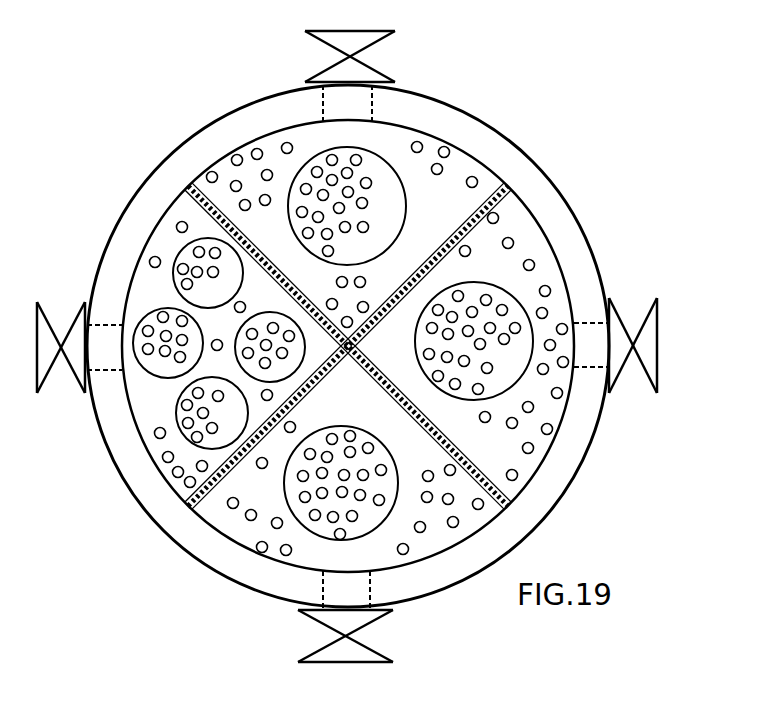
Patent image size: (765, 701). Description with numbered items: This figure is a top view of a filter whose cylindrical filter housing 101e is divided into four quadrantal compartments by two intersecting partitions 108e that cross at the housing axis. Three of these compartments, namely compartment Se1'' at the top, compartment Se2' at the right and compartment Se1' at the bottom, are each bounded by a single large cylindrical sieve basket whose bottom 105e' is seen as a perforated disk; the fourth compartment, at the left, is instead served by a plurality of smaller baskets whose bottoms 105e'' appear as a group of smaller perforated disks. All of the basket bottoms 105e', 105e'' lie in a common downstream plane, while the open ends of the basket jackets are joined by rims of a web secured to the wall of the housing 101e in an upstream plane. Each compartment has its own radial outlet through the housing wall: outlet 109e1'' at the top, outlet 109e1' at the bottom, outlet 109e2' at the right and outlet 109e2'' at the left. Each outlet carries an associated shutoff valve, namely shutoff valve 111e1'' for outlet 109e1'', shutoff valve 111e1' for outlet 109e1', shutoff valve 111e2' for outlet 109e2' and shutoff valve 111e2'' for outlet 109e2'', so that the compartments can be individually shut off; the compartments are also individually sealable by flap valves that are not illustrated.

The filter housing 101e is at (562, 267).
The intersecting partitions 108e is at (383, 313).
The basket bottom 105e' is at (449, 326).
The basket bottoms 105e'' is at (178, 296).
The quadrantal compartment Se1'' is at (342, 235).
The quadrantal compartment Se2' is at (350, 350).
The quadrantal compartment Se1' is at (356, 470).
The outlet 109e1'' is at (434, 93).
The shutoff valve 111e1'' is at (393, 48).
The outlet 109e1' is at (248, 598).
The shutoff valve 111e1' is at (317, 636).
The outlet 109e2'' is at (83, 420).
The shutoff valve 111e2'' is at (59, 317).
The outlet 109e2' is at (623, 288).
The shutoff valve 111e2' is at (665, 320).